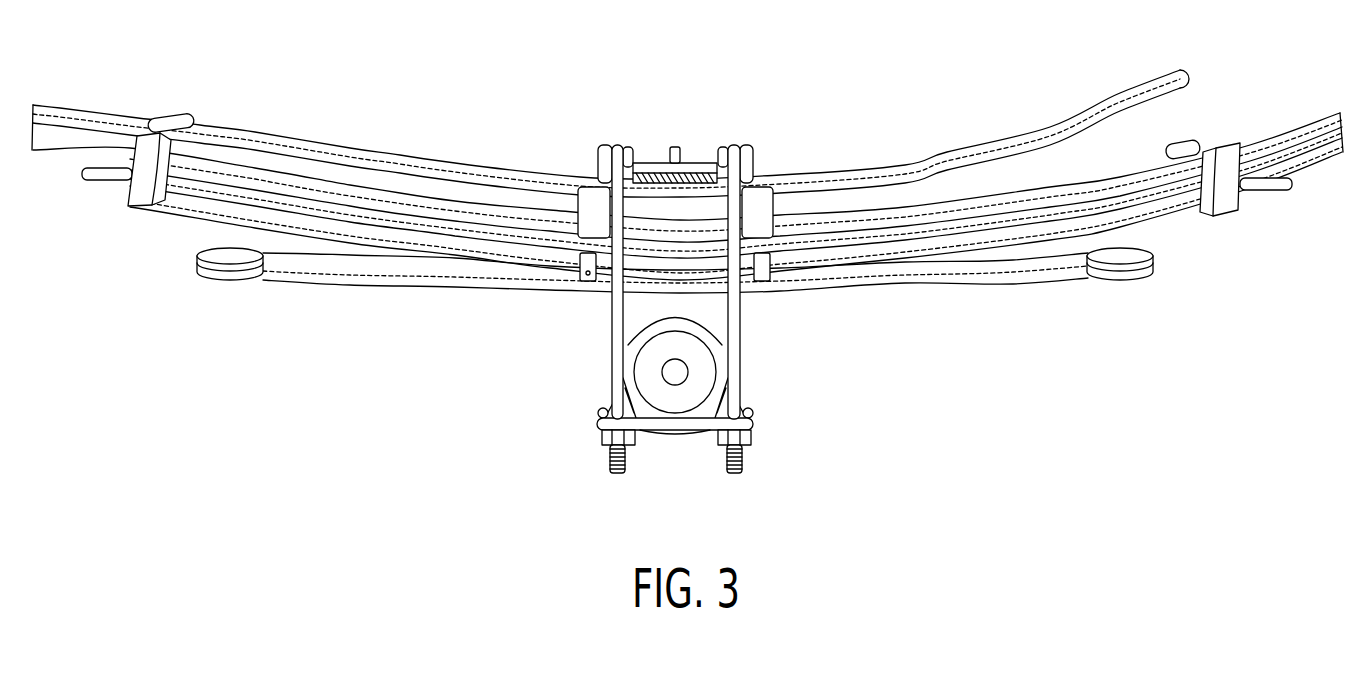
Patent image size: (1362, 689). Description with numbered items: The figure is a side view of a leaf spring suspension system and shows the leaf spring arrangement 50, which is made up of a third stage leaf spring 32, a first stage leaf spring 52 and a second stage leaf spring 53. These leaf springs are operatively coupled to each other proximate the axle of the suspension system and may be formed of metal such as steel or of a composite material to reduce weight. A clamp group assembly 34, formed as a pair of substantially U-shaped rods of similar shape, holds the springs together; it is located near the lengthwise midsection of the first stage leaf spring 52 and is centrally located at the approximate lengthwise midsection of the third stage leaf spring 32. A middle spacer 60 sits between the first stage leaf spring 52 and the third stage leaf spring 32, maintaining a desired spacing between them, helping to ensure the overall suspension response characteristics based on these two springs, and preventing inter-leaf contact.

The third stage leaf spring 32 is at (1153, 80).
The clamp group assembly 34 is at (733, 142).
The leaf spring arrangement 50 is at (711, 315).
The first stage leaf spring 52 is at (1310, 163).
The second stage leaf spring 53 is at (1030, 267).
The middle spacer 60 is at (655, 207).